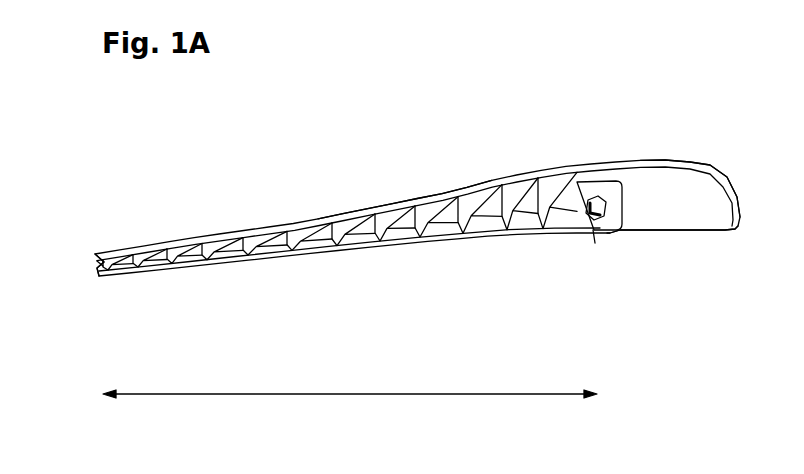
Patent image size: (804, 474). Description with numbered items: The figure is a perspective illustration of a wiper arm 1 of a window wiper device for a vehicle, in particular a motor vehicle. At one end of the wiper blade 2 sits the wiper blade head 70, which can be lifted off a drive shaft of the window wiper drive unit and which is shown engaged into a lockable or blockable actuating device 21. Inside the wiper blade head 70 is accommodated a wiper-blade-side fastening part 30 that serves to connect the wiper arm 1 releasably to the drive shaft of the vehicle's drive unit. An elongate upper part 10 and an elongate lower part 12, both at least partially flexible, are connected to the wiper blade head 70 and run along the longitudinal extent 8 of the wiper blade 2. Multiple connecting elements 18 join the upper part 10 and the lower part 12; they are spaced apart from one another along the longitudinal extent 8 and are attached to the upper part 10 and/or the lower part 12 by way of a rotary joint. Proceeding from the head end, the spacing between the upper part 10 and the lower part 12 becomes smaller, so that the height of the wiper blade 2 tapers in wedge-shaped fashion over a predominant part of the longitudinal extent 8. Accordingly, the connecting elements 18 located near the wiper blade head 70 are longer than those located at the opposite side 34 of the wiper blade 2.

The wiper arm 1 is at (346, 136).
The wiper blade 2 is at (552, 168).
The longitudinal extent 8 is at (253, 393).
The upper part 10 is at (410, 200).
The lower part 12 is at (396, 243).
The connecting elements 18 is at (334, 246).
The actuating device 21 is at (592, 233).
The wiper-blade-side fastening part 30 is at (680, 260).
The opposite side 34 is at (96, 292).
The wiper blade head 70 is at (679, 146).